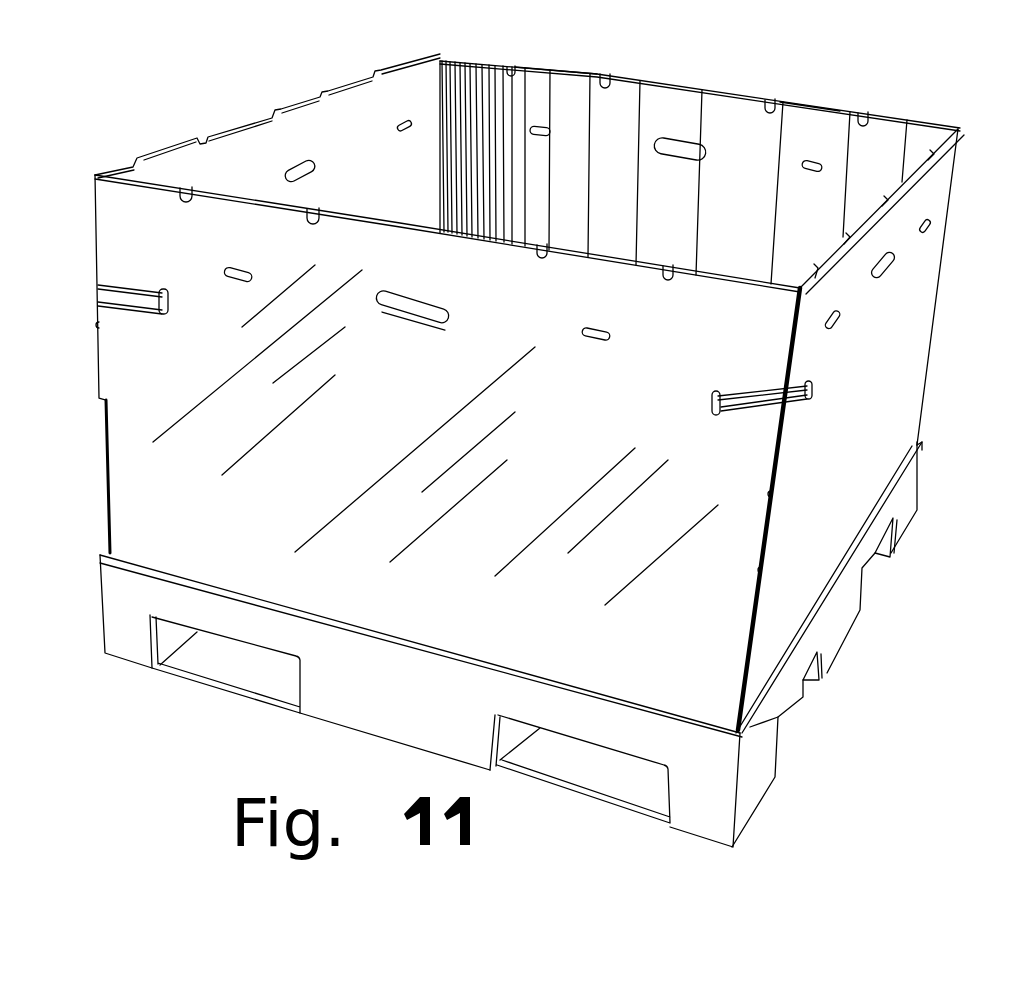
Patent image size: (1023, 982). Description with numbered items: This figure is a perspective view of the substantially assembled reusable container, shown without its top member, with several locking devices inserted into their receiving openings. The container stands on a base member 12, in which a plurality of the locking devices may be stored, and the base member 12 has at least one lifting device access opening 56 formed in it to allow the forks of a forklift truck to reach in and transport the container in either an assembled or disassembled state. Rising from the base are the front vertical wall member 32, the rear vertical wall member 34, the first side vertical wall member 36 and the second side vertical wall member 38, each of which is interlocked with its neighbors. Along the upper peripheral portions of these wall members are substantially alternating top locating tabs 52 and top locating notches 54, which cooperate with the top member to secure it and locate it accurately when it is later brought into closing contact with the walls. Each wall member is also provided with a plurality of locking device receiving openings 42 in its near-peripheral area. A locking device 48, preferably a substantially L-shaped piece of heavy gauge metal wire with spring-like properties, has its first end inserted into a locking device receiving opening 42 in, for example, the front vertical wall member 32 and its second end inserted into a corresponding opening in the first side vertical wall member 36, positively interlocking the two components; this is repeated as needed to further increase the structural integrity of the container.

The base member 12 is at (732, 847).
The front vertical wall member 32 is at (412, 410).
The rear vertical wall member 34 is at (672, 215).
The first side vertical wall member 36 is at (840, 390).
The second side vertical wall member 38 is at (368, 167).
The locking device receiving opening 42 is at (167, 315).
The locking device 48 is at (150, 283).
The top locating tab 52 is at (820, 100).
The top locating notch 54 is at (552, 66).
The lifting device access opening 56 is at (570, 775).